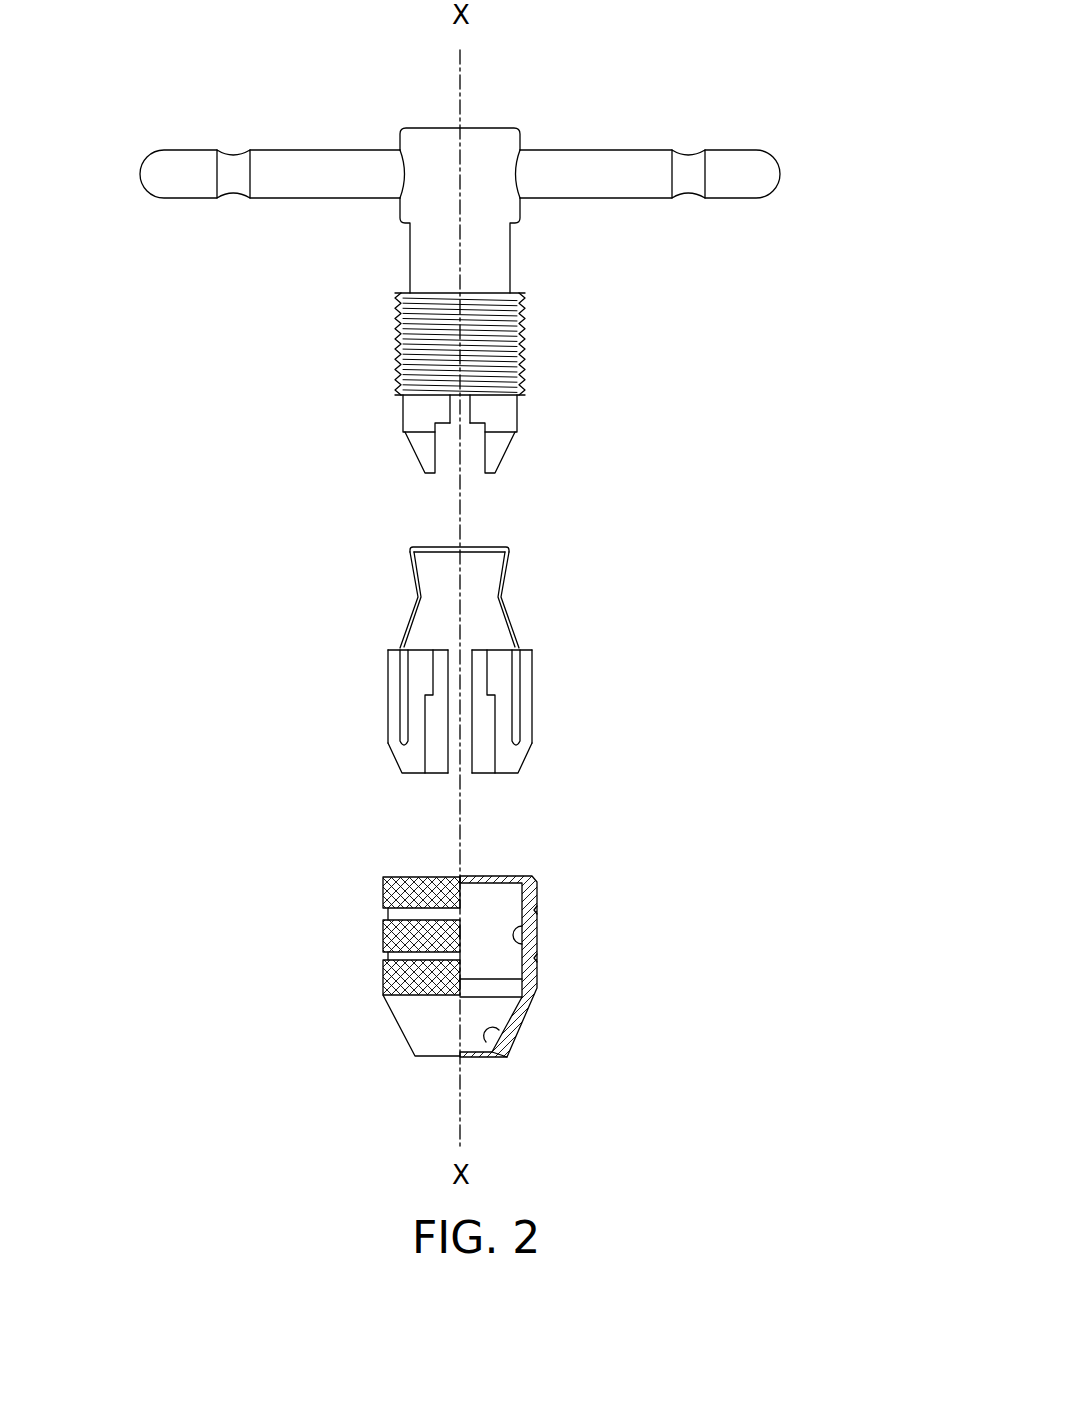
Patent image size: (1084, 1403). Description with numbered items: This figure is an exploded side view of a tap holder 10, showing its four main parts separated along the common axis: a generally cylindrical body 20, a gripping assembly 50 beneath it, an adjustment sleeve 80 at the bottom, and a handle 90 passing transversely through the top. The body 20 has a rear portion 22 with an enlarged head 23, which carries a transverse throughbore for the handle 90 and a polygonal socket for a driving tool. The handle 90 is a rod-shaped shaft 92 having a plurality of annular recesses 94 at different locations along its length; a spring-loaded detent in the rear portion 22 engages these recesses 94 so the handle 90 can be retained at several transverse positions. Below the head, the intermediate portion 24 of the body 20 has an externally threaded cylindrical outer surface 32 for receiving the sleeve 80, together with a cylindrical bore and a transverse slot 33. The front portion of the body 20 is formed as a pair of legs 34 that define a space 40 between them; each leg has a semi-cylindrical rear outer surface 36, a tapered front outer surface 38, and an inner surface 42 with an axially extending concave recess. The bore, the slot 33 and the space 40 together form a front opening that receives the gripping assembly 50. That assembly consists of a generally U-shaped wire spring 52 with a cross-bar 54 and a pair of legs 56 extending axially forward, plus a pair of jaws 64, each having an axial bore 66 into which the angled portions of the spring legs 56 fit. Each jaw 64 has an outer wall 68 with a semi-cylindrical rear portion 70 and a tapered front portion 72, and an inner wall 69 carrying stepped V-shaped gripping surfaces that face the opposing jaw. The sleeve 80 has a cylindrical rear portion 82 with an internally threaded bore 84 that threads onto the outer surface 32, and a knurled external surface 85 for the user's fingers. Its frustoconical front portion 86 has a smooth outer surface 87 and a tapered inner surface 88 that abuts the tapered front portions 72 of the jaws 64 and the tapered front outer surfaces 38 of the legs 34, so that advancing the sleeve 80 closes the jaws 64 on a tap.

The tap holder 10 is at (178, 67).
The body 20 is at (393, 268).
The rear portion 22 is at (397, 223).
The enlarged head 23 is at (413, 130).
The intermediate portion 24 is at (403, 330).
The externally threaded cylindrical outer surface 32 is at (502, 352).
The transverse slot 33 is at (450, 415).
The legs 34 is at (412, 458).
The semi-cylindrical rear outer surface 36 is at (516, 420).
The tapered front outer surface 38 is at (508, 450).
The space 40 is at (435, 478).
The inner surface 42 is at (483, 478).
The gripping assembly 50 is at (298, 613).
The U-shaped wire spring 52 is at (492, 545).
The cross-bar 54 is at (420, 545).
The legs 56 is at (412, 568).
The jaws 64 is at (388, 690).
The axial bore 66 is at (402, 652).
The outer wall 68 is at (388, 723).
The inner wall 69 is at (435, 730).
The semi-cylindrical rear portion 70 is at (388, 665).
The tapered front portion 72 is at (395, 760).
The adjustment sleeve 80 is at (575, 878).
The cylindrical rear portion 82 is at (388, 985).
The internally threaded bore 84 is at (538, 944).
The knurled external surface 85 is at (388, 935).
The frustoconical front portion 86 is at (530, 1010).
The smooth outer surface 87 is at (516, 1045).
The tapered inner surface 88 is at (490, 1042).
The handle 90 is at (612, 143).
The shaft 92 is at (613, 190).
The annular recesses 94 is at (236, 200).